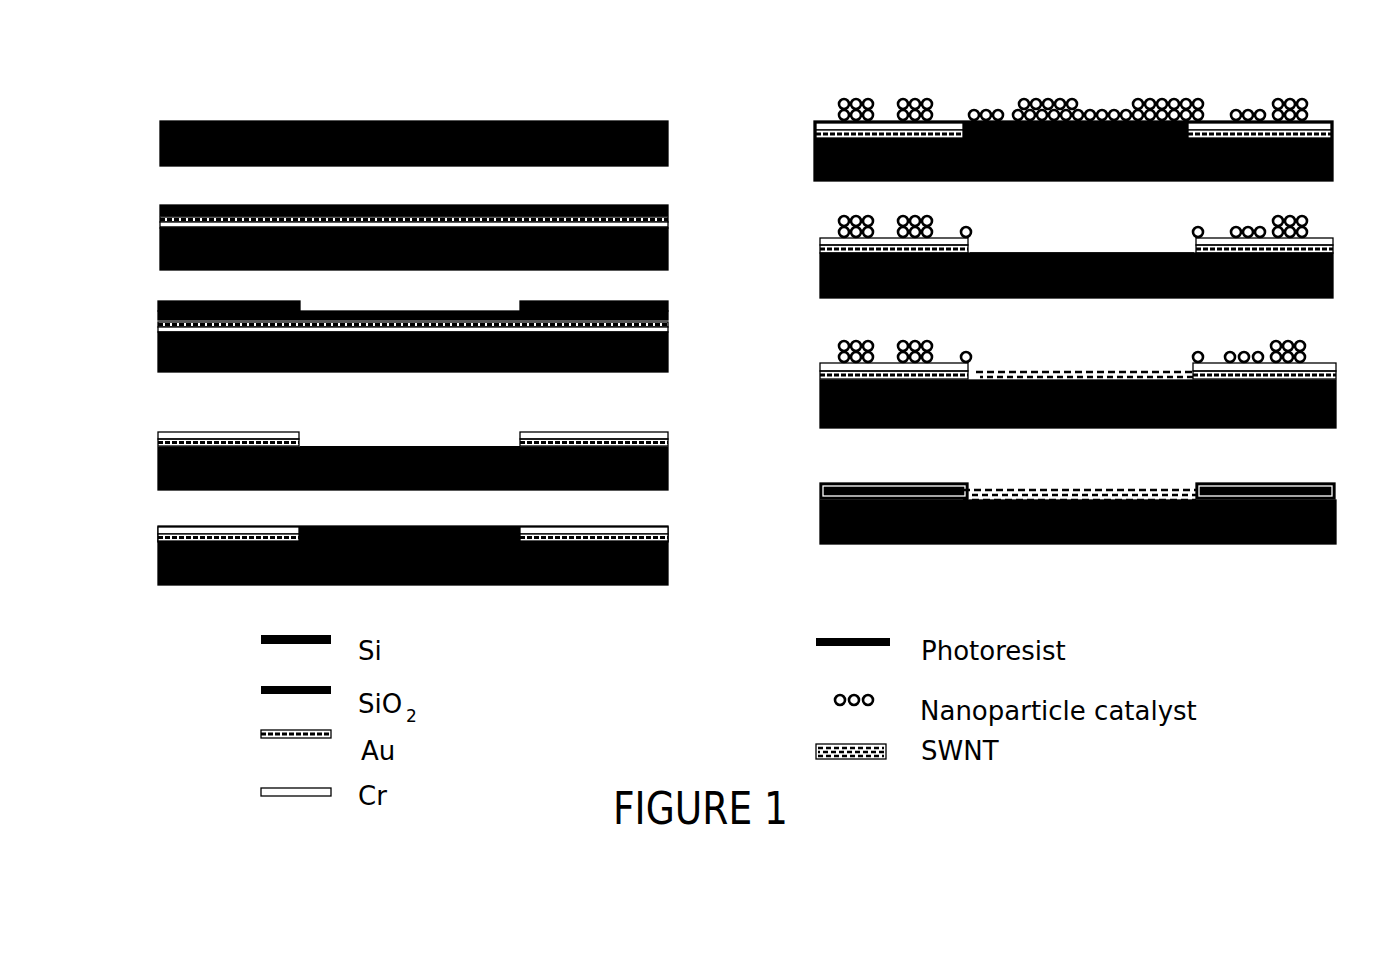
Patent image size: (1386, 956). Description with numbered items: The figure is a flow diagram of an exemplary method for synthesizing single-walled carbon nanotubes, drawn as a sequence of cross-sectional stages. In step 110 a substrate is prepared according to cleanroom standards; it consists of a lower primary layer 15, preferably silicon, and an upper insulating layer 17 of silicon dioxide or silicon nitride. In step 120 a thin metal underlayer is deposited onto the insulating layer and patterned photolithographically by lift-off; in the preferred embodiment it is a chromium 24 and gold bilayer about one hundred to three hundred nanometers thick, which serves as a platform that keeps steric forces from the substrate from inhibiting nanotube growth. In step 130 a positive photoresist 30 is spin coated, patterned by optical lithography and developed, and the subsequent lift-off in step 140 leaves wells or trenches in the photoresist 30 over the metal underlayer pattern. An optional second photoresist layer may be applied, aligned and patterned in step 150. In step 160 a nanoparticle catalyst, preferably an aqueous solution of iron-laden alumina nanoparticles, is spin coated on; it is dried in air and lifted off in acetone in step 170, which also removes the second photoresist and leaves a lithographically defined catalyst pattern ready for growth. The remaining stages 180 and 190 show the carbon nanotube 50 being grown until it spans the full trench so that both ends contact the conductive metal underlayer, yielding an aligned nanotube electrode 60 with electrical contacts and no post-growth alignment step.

The primary layer 15 is at (660, 157).
The insulating layer 17 is at (660, 118).
The chromium 24 is at (660, 219).
The photoresist 30 is at (660, 297).
The nanotube 50 is at (1090, 362).
The nanotube electrode 60 is at (1100, 480).
The substrate preparation step 110 is at (150, 130).
The metal underlayer deposition step 120 is at (150, 225).
The photoresist application step 130 is at (150, 335).
The lift-off step 140 is at (150, 450).
The second photoresist application step 150 is at (150, 545).
The catalyst application step 160 is at (808, 150).
The catalyst lift-off step 170 is at (812, 262).
The SWNT growth step 180 is at (812, 385).
The catalyst removal step 190 is at (812, 500).